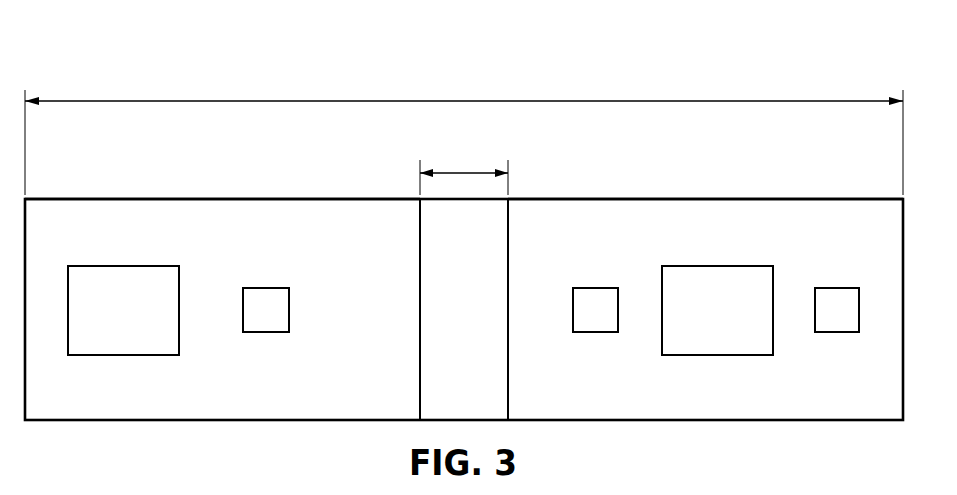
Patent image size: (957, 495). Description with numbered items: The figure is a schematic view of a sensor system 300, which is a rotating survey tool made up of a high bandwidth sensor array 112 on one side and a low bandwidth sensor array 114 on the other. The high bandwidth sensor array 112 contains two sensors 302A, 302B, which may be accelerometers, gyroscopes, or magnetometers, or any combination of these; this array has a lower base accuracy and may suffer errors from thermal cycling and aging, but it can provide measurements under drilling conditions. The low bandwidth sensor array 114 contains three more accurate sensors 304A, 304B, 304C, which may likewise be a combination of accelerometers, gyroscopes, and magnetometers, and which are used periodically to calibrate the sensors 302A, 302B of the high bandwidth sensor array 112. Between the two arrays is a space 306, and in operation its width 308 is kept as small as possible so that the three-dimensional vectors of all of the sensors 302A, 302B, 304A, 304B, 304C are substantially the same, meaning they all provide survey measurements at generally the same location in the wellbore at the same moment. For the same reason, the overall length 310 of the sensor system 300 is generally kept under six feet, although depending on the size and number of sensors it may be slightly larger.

The sensor system 300 is at (169, 61).
The high bandwidth sensor array 112 is at (221, 188).
The low bandwidth sensor array 114 is at (708, 188).
The space 306 is at (442, 323).
The width 308 is at (465, 172).
The length 310 is at (463, 100).
The sensor 302A is at (154, 323).
The sensor 302B is at (268, 288).
The sensor 304A is at (596, 288).
The sensor 304B is at (746, 323).
The sensor 304C is at (838, 288).